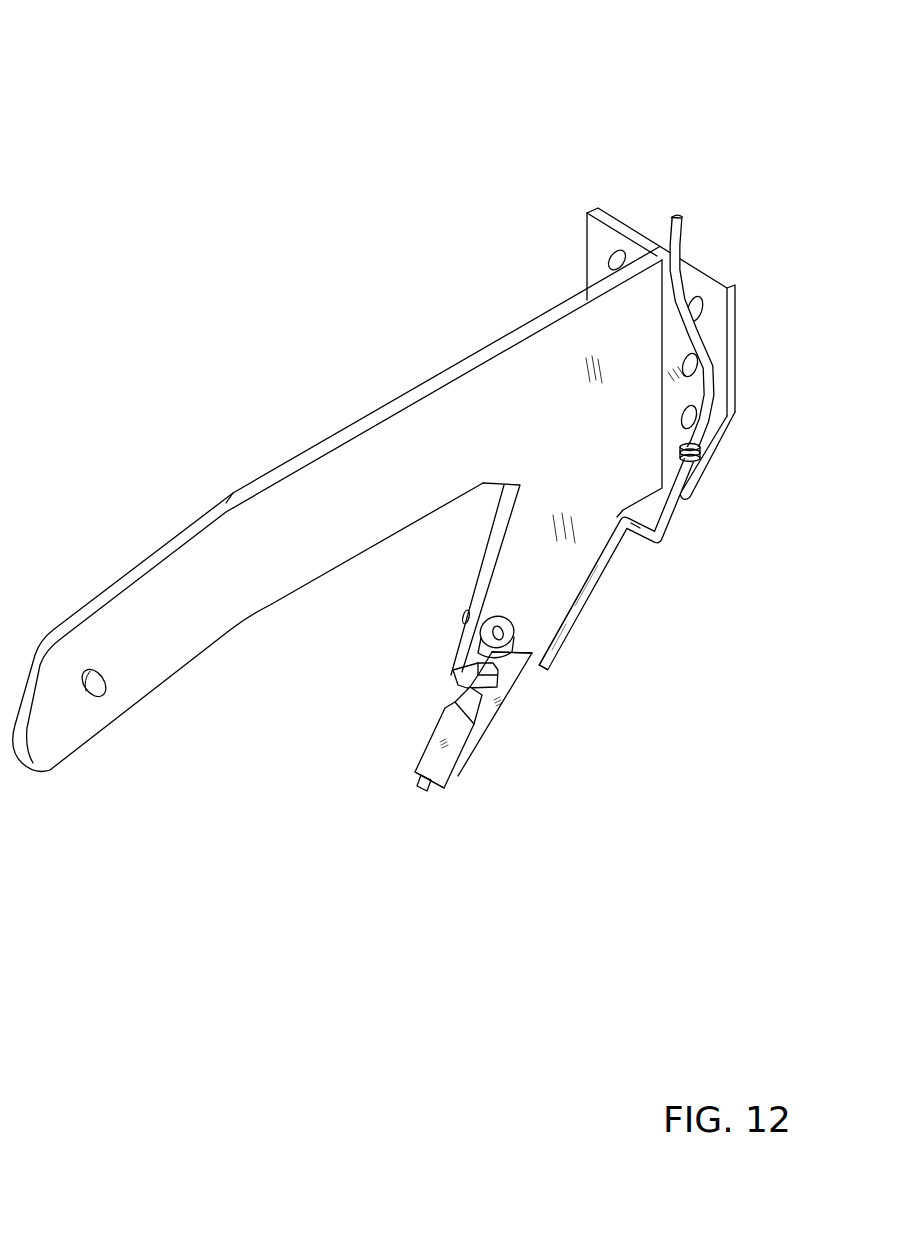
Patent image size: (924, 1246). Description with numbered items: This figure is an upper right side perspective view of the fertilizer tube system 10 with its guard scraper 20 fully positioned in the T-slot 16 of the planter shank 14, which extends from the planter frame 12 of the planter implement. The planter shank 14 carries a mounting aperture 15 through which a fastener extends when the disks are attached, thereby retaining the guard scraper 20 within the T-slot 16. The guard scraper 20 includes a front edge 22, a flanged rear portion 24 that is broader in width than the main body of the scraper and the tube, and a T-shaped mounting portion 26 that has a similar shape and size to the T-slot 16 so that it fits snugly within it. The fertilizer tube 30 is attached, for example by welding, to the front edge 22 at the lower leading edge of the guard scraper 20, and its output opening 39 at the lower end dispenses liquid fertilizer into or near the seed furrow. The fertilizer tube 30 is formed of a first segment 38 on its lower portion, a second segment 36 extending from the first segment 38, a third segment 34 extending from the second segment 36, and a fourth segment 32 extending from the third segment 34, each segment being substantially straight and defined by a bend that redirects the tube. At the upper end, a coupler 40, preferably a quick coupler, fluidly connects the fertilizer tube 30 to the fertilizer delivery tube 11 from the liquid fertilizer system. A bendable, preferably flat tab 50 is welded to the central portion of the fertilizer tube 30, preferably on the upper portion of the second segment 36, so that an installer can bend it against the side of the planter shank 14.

The fertilizer tube system 10 is at (126, 129).
The fertilizer delivery tube 11 is at (687, 237).
The planter frame 12 is at (362, 409).
The planter shank 14 is at (478, 551).
The mounting aperture 15 is at (482, 631).
The T-slot 16 is at (453, 673).
The guard scraper 20 is at (410, 772).
The front edge 22 is at (550, 730).
The rear portion 24 is at (440, 731).
The mounting portion 26 is at (518, 660).
The fertilizer tube 30 is at (588, 620).
The fourth segment 32 is at (651, 611).
The third segment 34 is at (630, 540).
The second segment 36 is at (560, 637).
The first segment 38 is at (470, 712).
The output opening 39 is at (425, 785).
The coupler 40 is at (700, 460).
The tab 50 is at (597, 566).